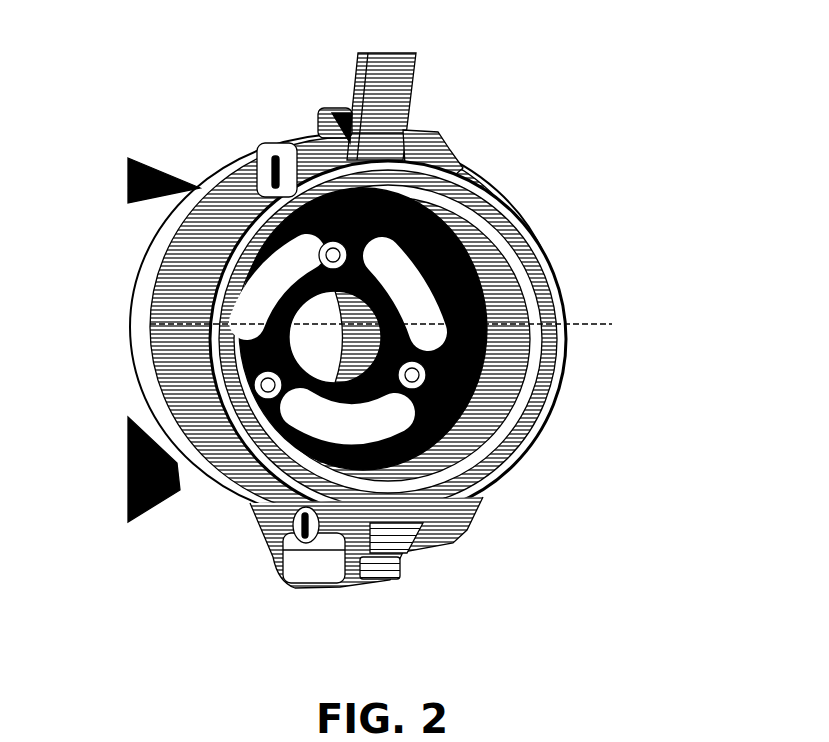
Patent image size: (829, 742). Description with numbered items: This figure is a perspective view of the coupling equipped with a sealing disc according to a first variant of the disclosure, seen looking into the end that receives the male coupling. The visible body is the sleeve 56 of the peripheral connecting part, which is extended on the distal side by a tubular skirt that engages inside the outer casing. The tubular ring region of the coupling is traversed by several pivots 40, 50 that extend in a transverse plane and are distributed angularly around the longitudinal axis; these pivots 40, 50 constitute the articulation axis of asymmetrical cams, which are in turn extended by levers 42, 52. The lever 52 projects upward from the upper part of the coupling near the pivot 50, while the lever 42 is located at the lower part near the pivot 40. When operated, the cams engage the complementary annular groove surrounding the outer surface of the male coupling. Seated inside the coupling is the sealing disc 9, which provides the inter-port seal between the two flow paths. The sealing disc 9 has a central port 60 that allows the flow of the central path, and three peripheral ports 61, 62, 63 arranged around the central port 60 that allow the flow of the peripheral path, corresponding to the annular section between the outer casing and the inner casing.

The sealing disc 9 is at (483, 380).
The pivot 40 is at (273, 527).
The lever 42 is at (400, 573).
The pivot 50 is at (258, 163).
The lever 52 is at (415, 70).
The sleeve 56 is at (557, 287).
The central port 60 is at (329, 334).
The peripheral port 61 is at (405, 294).
The peripheral port 62 is at (354, 442).
The peripheral port 63 is at (273, 287).